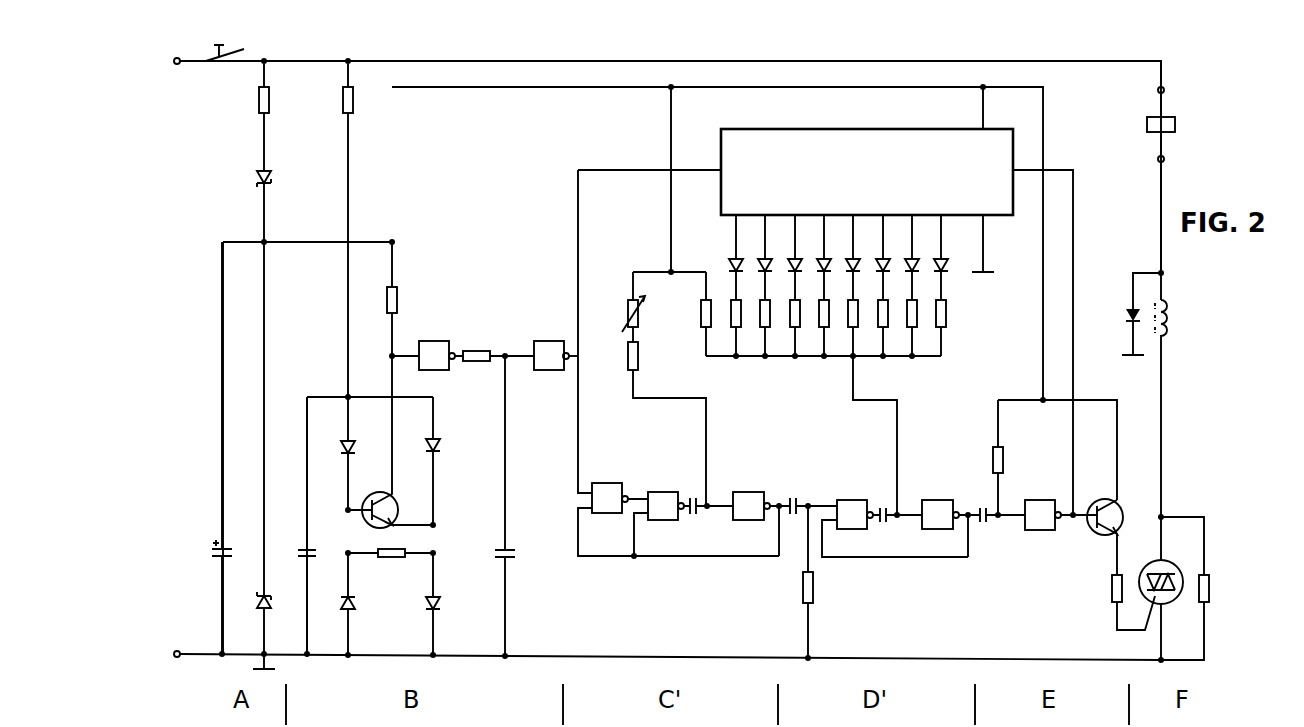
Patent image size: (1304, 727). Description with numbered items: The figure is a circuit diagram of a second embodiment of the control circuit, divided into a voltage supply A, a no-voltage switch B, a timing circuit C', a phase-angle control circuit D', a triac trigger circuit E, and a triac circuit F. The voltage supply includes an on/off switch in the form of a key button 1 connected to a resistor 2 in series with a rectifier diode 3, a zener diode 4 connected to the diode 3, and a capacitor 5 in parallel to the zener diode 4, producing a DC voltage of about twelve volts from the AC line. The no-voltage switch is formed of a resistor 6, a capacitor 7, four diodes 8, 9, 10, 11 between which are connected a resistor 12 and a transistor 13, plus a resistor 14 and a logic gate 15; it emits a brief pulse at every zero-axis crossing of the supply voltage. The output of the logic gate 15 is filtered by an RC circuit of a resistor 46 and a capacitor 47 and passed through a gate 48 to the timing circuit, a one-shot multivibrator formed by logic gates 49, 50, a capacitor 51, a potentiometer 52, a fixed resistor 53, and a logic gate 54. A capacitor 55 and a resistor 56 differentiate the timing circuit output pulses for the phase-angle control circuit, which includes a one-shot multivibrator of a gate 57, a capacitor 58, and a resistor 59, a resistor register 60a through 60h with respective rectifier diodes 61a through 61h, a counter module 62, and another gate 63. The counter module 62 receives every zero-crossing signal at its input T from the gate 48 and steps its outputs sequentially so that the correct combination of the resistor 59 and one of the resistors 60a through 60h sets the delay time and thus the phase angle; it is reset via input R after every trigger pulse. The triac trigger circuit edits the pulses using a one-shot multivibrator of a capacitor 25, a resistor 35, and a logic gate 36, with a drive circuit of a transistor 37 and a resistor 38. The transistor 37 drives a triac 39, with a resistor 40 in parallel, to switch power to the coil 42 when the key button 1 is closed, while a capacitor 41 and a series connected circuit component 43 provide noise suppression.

The key button 1 is at (228, 59).
The resistor 2 is at (270, 101).
The rectifier diode 3 is at (271, 180).
The zener diode 4 is at (270, 601).
The capacitor 5 is at (224, 551).
The resistor 6 is at (354, 104).
The capacitor 7 is at (313, 552).
The diode 8 is at (355, 451).
The diode 9 is at (440, 449).
The diode 10 is at (355, 607).
The diode 11 is at (440, 607).
The resistor 12 is at (404, 560).
The transistor 13 is at (392, 505).
The resistor 14 is at (397, 298).
The logic gate 15 is at (430, 341).
The capacitor 25 is at (982, 508).
The resistor 35 is at (1003, 461).
The logic gate 36 is at (1040, 500).
The transistor 37 is at (1120, 505).
The resistor 38 is at (1110, 580).
The triac 39 is at (1171, 566).
The resistor 40 is at (1211, 585).
The capacitor 41 is at (1125, 306).
The coil 42 is at (1170, 320).
The series connected circuit component 43 is at (1170, 120).
The resistor 46 is at (482, 350).
The capacitor 47 is at (511, 558).
The gate 48 is at (543, 341).
The logic gate 49 is at (606, 478).
The logic gate 50 is at (660, 492).
The capacitor 51 is at (693, 498).
The potentiometer 52 is at (640, 315).
The fixed resistor 53 is at (640, 360).
The logic gate 54 is at (747, 492).
The capacitor 55 is at (795, 498).
The resistor 56 is at (813, 594).
The gate 57 is at (845, 500).
The capacitor 58 is at (884, 508).
The resistor 59 is at (706, 334).
The resistor 60a is at (740, 335).
The resistor 60h is at (948, 336).
The rectifier diode 61a is at (730, 265).
The rectifier diode 61h is at (945, 273).
The counter module 62 is at (866, 129).
The gate 63 is at (937, 500).